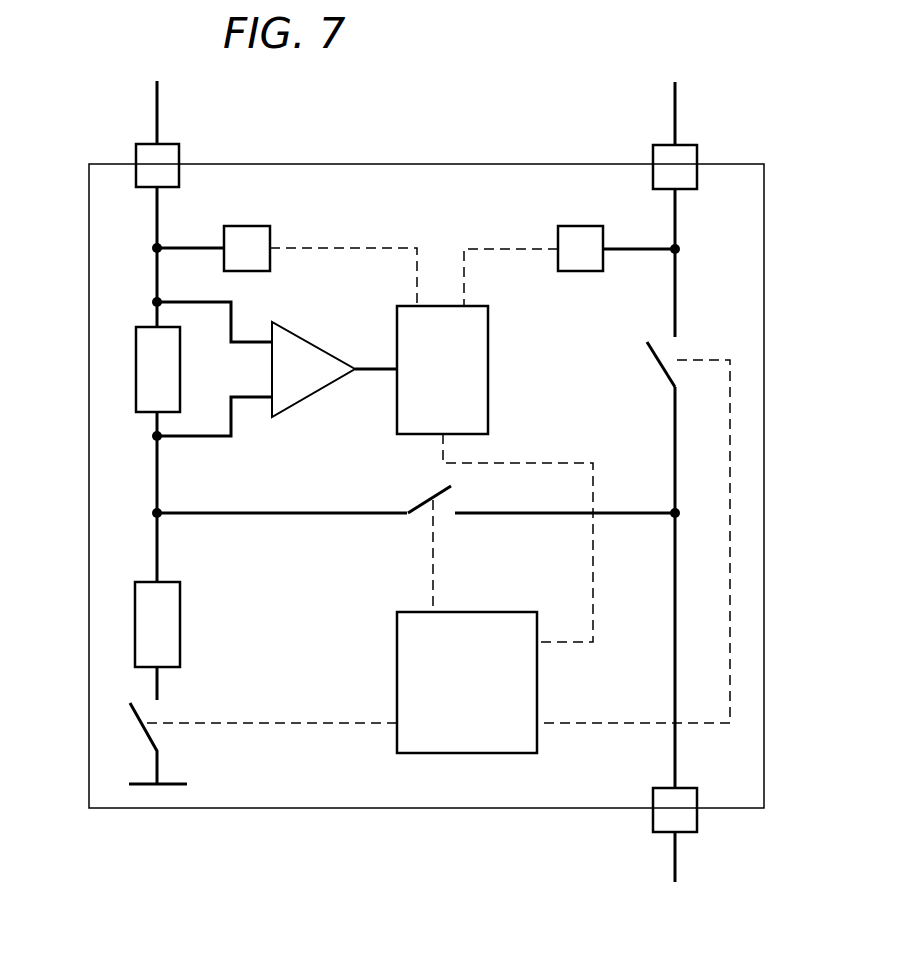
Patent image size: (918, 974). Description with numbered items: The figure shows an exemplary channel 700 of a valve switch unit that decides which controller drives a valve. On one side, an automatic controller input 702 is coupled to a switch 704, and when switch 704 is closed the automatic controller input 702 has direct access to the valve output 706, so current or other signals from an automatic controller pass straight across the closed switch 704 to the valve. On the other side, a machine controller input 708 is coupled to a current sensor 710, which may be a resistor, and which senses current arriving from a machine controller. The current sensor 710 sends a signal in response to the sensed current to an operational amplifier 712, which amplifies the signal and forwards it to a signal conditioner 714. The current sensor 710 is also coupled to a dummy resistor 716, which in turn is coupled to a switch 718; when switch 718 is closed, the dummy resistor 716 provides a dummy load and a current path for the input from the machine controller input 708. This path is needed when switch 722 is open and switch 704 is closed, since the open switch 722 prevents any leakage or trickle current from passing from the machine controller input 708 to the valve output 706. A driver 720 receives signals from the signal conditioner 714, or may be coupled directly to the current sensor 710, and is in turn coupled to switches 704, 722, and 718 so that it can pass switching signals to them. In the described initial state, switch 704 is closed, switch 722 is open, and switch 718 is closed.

The channel 700 is at (403, 164).
The automatic controller input 702 is at (697, 150).
The switch 704 is at (653, 358).
The valve output 706 is at (653, 827).
The machine controller input 708 is at (136, 145).
The current sensor 710 is at (135, 362).
The operational amplifier 712 is at (310, 352).
The signal conditioner 714 is at (492, 352).
The dummy resistor 716 is at (135, 608).
The switch 718 is at (129, 708).
The driver 720 is at (397, 660).
The switch 722 is at (420, 490).